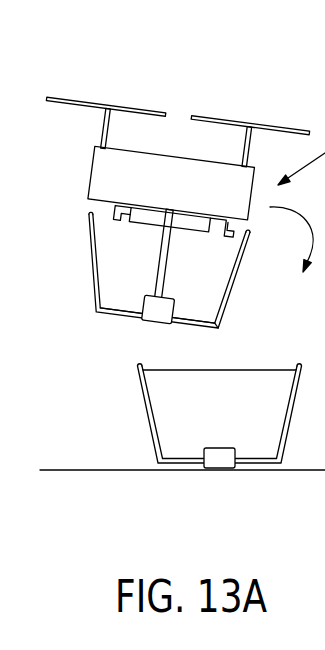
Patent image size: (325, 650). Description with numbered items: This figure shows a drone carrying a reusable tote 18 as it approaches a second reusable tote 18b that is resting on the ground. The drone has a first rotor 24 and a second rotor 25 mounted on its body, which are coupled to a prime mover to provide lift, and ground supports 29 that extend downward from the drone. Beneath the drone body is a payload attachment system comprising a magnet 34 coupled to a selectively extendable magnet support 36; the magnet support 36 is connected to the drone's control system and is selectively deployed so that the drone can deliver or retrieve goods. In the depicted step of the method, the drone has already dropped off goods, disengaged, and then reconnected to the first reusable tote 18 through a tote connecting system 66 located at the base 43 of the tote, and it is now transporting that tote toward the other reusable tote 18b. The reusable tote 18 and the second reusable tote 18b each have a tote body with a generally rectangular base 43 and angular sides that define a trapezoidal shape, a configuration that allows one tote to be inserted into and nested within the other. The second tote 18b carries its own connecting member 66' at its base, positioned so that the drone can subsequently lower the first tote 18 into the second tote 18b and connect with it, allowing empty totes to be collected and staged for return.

The first rotor 24 is at (78, 102).
The second rotor 25 is at (223, 118).
The ground supports 29 is at (227, 237).
The selectively extendable magnet support 36 is at (163, 236).
The base 43 is at (102, 318).
The magnet 34 is at (143, 300).
The tote connecting system 66 is at (179, 328).
The reusable tote 18 is at (260, 307).
The second reusable tote 18b is at (121, 422).
The coupler of second container 66' is at (226, 491).